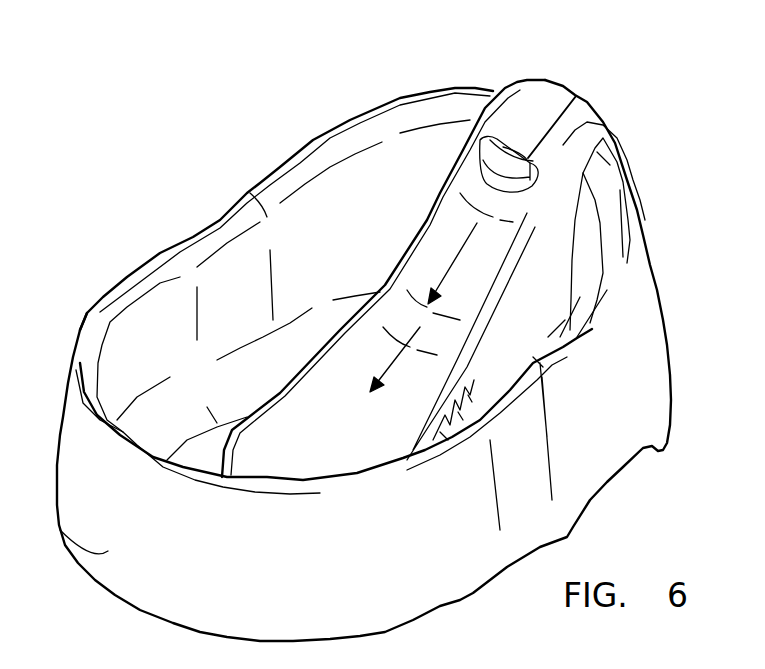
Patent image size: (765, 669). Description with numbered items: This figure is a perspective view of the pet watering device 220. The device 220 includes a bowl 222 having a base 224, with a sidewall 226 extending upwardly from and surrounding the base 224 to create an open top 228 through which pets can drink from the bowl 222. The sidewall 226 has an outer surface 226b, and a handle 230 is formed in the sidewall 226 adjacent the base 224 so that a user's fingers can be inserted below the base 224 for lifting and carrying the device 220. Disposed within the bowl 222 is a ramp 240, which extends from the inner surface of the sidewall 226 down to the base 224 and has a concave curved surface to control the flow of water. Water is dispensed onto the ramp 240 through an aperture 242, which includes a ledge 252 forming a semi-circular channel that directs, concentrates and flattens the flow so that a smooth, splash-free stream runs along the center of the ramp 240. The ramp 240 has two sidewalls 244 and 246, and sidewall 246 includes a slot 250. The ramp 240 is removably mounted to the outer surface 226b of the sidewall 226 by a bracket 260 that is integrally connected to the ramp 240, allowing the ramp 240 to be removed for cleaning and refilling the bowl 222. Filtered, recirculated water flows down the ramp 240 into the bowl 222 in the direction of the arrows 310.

The pet watering device 220 is at (266, 131).
The bowl 222 is at (113, 289).
The base 224 is at (203, 453).
The sidewall 226 is at (110, 550).
The outer surface 226b is at (192, 343).
The open top 228 is at (413, 160).
The handle 230 is at (610, 480).
The ramp 240 is at (305, 457).
The aperture 242 is at (556, 128).
The ramp sidewall 244 is at (488, 108).
The ramp sidewall 246 is at (518, 322).
The slot 250 is at (460, 440).
The ledge 252 is at (500, 146).
The bracket 260 is at (618, 142).
The arrows 310 is at (453, 266).